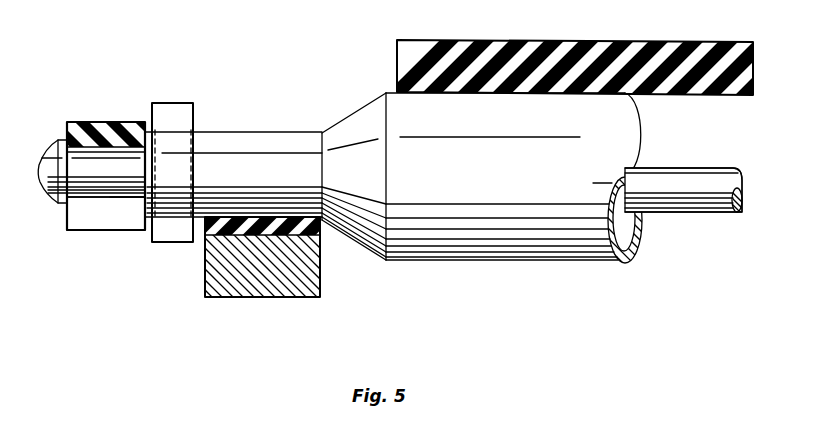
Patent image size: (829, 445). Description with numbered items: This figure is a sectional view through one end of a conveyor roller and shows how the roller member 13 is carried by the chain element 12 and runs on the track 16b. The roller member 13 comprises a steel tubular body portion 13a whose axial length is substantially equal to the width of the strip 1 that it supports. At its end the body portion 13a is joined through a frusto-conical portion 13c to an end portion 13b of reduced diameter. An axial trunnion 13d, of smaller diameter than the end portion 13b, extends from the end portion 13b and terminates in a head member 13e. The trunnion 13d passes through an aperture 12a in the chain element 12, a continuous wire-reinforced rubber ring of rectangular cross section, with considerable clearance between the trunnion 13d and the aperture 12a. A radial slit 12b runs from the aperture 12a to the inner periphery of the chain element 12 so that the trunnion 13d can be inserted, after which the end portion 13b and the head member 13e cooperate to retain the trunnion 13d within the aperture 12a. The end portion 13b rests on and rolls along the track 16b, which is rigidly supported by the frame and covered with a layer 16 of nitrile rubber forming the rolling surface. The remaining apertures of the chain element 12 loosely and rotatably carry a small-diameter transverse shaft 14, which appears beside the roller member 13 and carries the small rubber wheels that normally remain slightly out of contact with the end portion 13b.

The strip 1 is at (528, 50).
The chain element 12 is at (76, 127).
The aperture 12a is at (127, 195).
The radial slit 12b is at (102, 213).
The roller member 13 is at (575, 238).
The tubular body portion 13a is at (527, 242).
The end portion 13b is at (248, 146).
The frusto-conical portion 13c is at (373, 228).
The axial trunnion 13d is at (88, 162).
The head member 13e is at (50, 181).
The transverse shaft 14 is at (712, 196).
The clamp block 16 is at (207, 237).
The track 16b is at (280, 282).